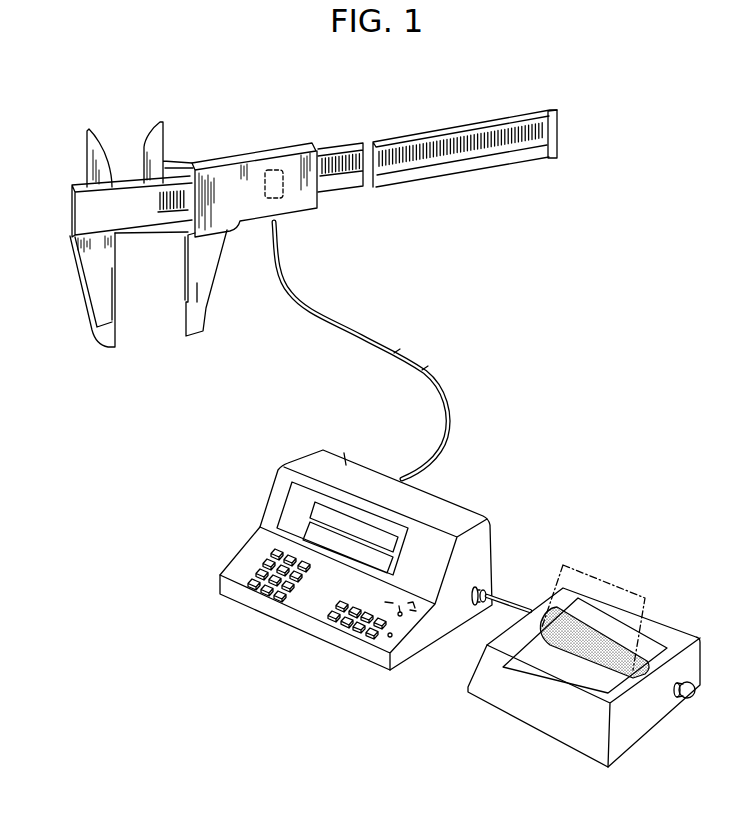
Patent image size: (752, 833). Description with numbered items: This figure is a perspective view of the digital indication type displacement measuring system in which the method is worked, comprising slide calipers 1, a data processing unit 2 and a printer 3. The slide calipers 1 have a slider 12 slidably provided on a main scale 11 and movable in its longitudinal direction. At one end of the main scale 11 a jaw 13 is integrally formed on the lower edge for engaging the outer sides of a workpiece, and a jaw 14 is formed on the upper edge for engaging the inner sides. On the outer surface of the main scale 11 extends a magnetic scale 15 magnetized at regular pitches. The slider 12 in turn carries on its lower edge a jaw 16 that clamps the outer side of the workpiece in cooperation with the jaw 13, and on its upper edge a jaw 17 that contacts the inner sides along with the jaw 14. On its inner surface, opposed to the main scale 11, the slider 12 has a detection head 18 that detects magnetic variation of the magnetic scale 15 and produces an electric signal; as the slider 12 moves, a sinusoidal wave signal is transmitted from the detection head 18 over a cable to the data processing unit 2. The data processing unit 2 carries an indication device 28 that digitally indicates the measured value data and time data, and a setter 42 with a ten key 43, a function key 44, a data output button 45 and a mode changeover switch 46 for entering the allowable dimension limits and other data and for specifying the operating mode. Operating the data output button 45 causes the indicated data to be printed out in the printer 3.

The slide calipers 1 is at (314, 157).
The main scale 11 is at (423, 135).
The slider 12 is at (260, 168).
The jaw 13 is at (98, 328).
The jaw 14 is at (98, 148).
The magnetic scale 15 is at (487, 150).
The jaw 16 is at (187, 308).
The jaw 17 is at (160, 140).
The detection head 18 is at (283, 187).
The data processing unit 2 is at (360, 560).
The indication device 28 is at (305, 484).
The printer 3 is at (686, 634).
The setter 42 is at (250, 589).
The ten key 43 is at (262, 591).
The function key 44 is at (352, 630).
The data output button 45 is at (389, 638).
The mode changeover switch 46 is at (406, 618).